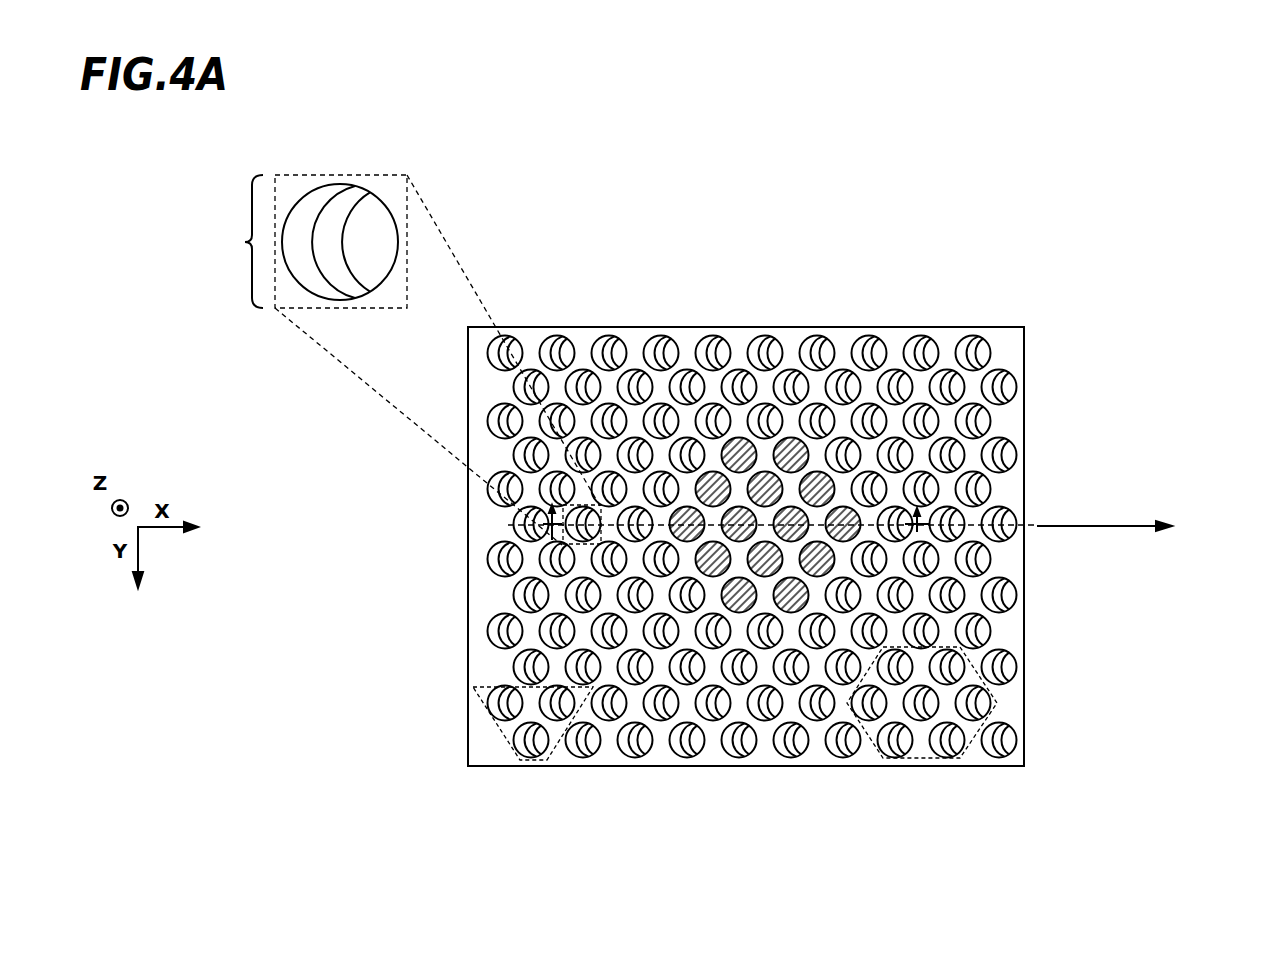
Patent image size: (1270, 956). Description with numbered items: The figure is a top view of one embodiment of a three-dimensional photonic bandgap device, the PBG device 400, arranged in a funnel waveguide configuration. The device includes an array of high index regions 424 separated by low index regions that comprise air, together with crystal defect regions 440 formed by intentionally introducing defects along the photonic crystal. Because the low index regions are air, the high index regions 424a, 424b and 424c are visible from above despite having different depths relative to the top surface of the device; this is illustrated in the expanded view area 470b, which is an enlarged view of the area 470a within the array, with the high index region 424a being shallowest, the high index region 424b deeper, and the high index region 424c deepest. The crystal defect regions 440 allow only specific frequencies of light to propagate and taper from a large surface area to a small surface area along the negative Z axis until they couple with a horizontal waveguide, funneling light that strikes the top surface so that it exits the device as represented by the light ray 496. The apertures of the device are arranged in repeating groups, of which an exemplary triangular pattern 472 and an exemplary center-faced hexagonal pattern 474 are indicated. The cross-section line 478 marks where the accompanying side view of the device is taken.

The 3D PBG device 400 is at (1170, 174).
The high index regions 424 is at (398, 197).
The high index region 424a is at (378, 220).
The high index region 424b is at (333, 222).
The high index region 424c is at (300, 228).
The crystal defect regions 440 is at (710, 483).
The area 470a is at (562, 545).
The expanded view area 470b is at (389, 360).
The triangular pattern 472 is at (500, 738).
The center-faced hexagonal pattern 474 is at (925, 740).
The cross-section line 478 is at (917, 513).
The light ray 496 is at (1123, 527).